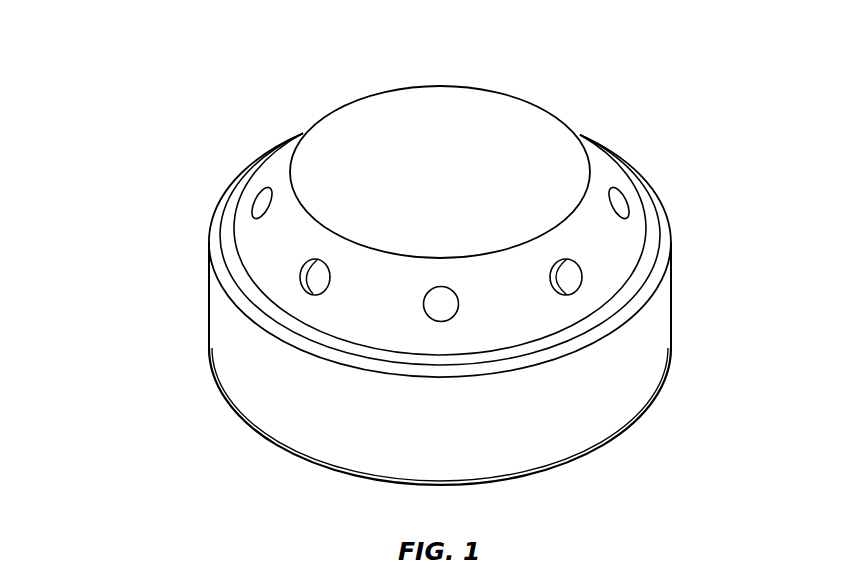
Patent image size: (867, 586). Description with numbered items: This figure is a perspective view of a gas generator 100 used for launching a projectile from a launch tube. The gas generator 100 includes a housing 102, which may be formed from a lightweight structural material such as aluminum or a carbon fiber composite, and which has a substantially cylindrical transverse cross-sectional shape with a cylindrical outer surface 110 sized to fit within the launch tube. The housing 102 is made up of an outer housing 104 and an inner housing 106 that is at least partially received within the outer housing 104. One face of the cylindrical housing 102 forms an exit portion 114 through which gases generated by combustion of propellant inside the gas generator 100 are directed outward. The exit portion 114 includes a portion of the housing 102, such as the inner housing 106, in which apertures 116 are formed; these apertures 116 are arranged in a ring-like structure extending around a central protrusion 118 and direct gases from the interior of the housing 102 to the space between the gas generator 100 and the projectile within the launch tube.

The gas generator 100 is at (158, 108).
The housing 102 is at (767, 340).
The outer housing 104 is at (638, 353).
The inner housing 106 is at (620, 433).
The cylindrical outer surface 110 is at (323, 437).
The exit portion 114 is at (282, 173).
The apertures 116 is at (620, 202).
The protrusion 118 is at (446, 117).